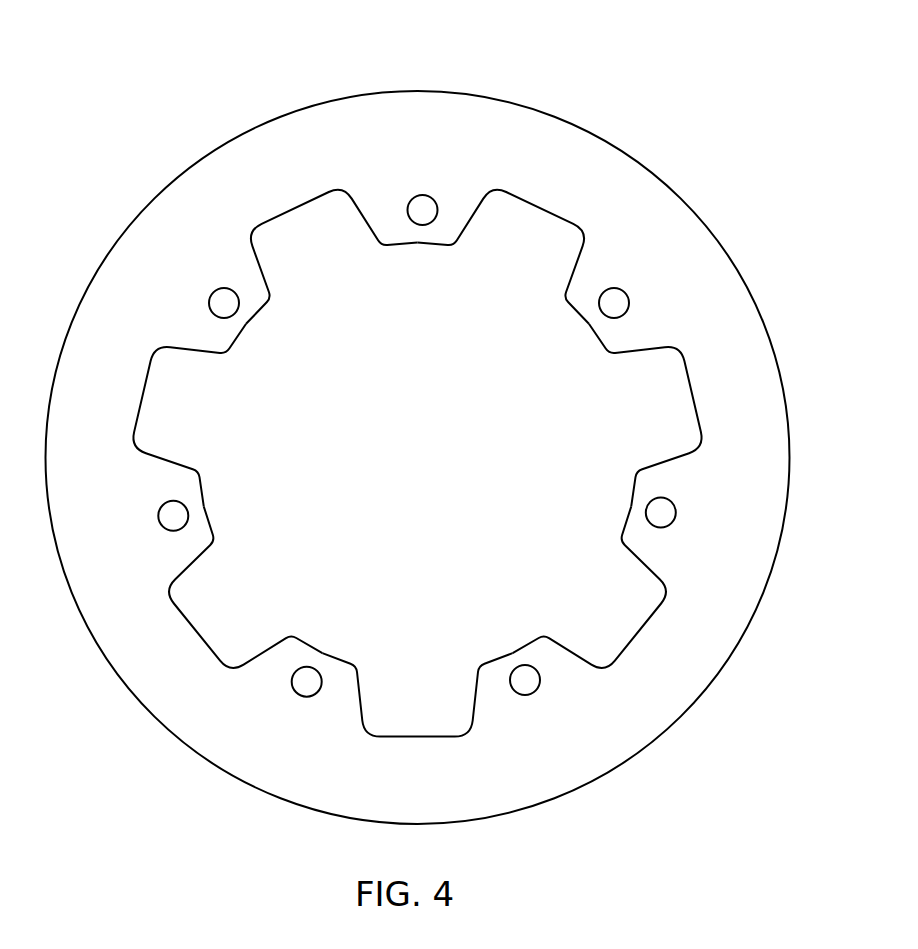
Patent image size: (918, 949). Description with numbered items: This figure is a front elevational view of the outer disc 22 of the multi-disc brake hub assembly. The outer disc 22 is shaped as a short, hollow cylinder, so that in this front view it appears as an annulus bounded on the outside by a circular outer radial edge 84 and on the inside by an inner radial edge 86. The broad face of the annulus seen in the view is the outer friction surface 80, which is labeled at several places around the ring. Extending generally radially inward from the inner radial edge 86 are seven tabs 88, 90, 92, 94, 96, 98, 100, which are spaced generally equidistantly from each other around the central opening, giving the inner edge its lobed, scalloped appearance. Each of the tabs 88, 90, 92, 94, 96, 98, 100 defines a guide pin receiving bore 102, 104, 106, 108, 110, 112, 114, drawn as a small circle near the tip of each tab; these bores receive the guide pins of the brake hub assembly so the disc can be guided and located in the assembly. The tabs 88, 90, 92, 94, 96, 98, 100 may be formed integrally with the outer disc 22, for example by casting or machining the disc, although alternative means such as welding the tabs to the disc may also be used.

The outer disc 22 is at (218, 98).
The outer friction surface 80 is at (436, 147).
The outer radial edge 84 is at (593, 129).
The inner radial edge 86 is at (546, 216).
The tab 88 is at (268, 272).
The tab 90 is at (648, 352).
The tab 92 is at (645, 568).
The tab 94 is at (568, 655).
The tab 96 is at (358, 697).
The tab 98 is at (190, 563).
The tab 100 is at (191, 349).
The guide pin receiving bore 102 is at (433, 198).
The guide pin receiving bore 104 is at (626, 292).
The guide pin receiving bore 106 is at (676, 511).
The guide pin receiving bore 108 is at (525, 696).
The guide pin receiving bore 110 is at (304, 697).
The guide pin receiving bore 112 is at (159, 508).
The guide pin receiving bore 114 is at (213, 292).